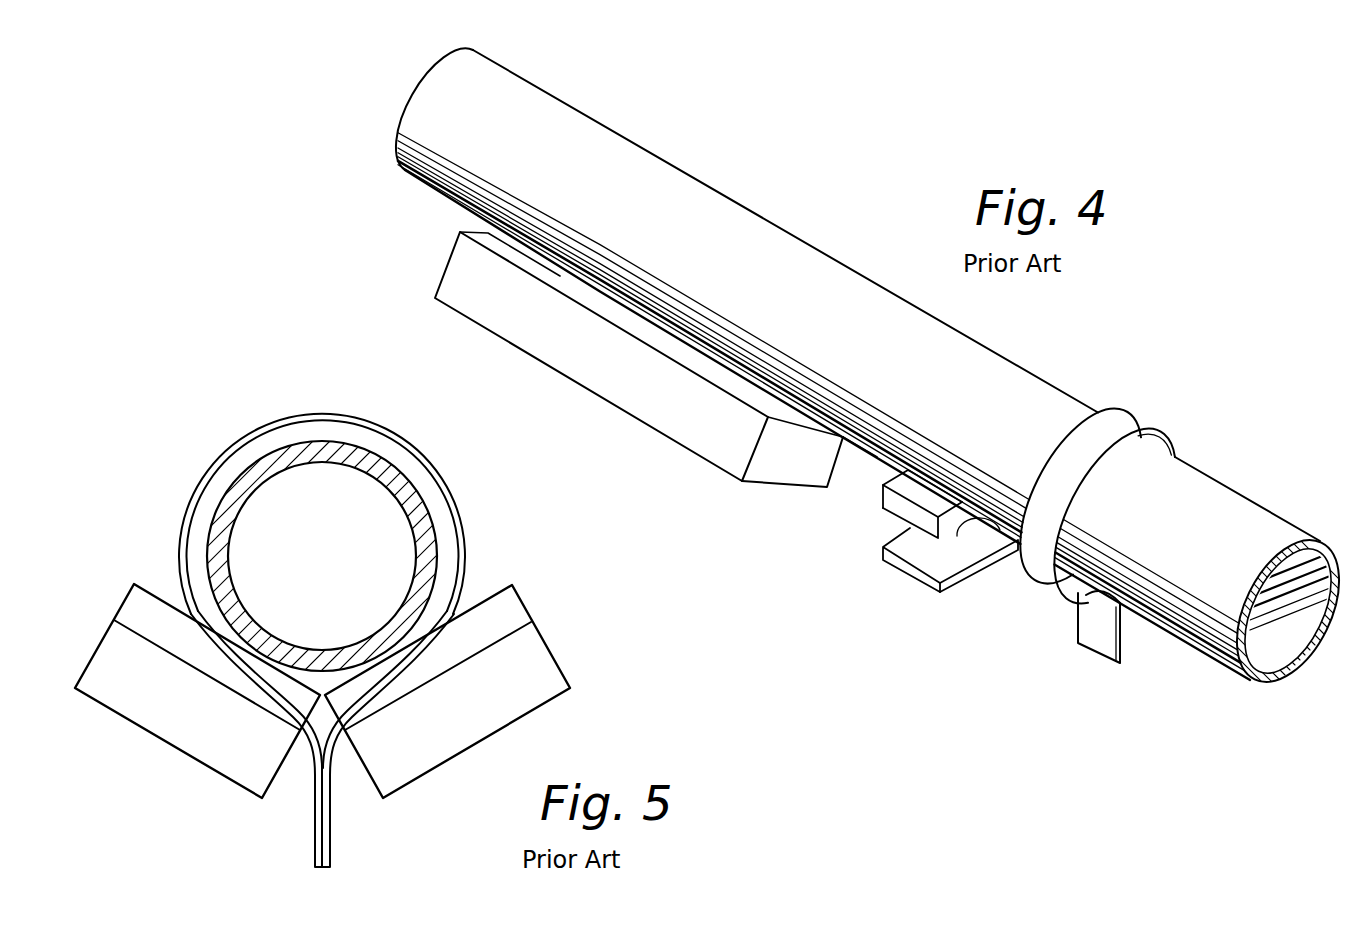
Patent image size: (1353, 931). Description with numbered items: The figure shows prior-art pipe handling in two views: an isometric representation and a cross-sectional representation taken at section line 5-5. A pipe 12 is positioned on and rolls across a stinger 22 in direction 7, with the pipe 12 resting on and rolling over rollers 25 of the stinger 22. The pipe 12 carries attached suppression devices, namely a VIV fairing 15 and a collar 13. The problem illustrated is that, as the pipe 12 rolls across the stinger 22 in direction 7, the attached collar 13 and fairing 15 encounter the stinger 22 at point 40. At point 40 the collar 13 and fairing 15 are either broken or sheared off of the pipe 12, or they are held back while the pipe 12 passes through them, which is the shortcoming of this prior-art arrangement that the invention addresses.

In FIG. 4, the pipe 12 is at (753, 211).
In FIG. 5, the pipe 12 is at (428, 507).
In FIG. 4, the collar 13 is at (923, 577).
In FIG. 4, the VIV fairing 15 is at (1142, 414).
In FIG. 5, the VIV fairing 15 is at (415, 443).
In FIG. 4, the stinger 22 is at (488, 333).
In FIG. 5, the stinger 22 is at (545, 667).
In FIG. 5, the rollers 25 is at (515, 604).
In FIG. 4, the point 40 is at (833, 533).
In FIG. 4, the section line 5- 5 is at (667, 283).
In FIG. 4, the direction 7 is at (356, 187).